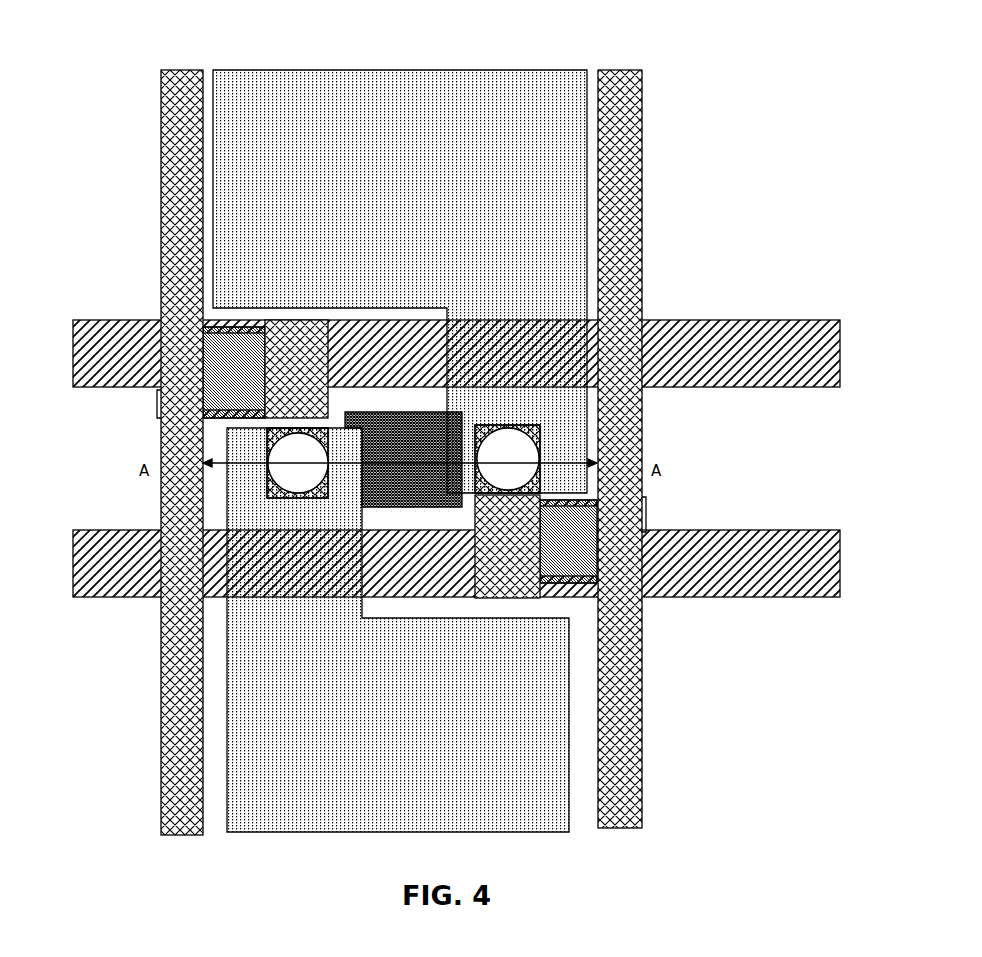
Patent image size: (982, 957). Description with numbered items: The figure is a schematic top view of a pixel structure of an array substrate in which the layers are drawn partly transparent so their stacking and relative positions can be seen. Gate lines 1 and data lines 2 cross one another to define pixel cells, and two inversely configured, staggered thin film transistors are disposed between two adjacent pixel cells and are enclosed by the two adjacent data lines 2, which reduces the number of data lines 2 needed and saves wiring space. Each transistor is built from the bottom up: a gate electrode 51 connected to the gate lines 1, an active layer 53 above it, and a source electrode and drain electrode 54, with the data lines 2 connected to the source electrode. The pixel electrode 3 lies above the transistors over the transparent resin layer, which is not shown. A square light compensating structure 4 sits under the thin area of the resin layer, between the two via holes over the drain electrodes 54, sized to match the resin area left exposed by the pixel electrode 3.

The gate line 1 is at (690, 590).
The data line 2 is at (627, 432).
The pixel electrode 3 is at (467, 100).
The light compensating structure 4 is at (442, 447).
The gate electrode 51 is at (157, 405).
The active layer 53 is at (230, 345).
The drain electrode 54 is at (303, 407).